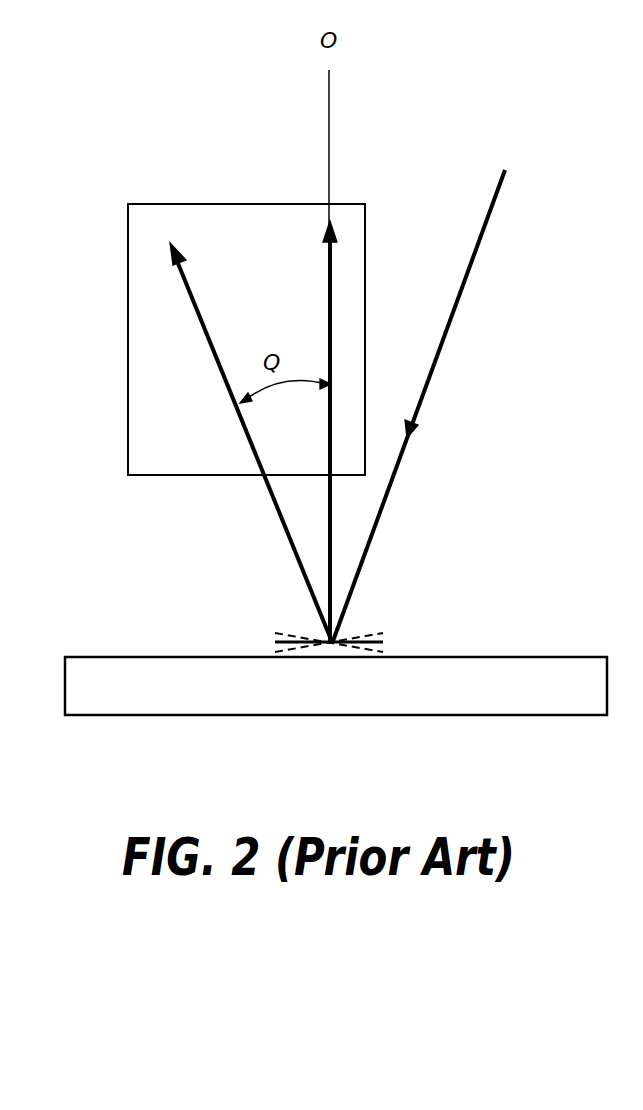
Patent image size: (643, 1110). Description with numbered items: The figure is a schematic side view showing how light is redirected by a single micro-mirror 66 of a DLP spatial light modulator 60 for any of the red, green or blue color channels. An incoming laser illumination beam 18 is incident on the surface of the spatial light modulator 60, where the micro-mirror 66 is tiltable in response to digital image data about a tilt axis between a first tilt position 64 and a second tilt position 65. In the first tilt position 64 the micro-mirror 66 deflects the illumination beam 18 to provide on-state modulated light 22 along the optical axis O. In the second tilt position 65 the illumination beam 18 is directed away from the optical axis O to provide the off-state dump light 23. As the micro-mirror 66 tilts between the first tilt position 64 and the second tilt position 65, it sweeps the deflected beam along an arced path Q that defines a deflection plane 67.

The laser illumination beam 18 is at (478, 242).
The on-state modulated light 22 is at (328, 292).
The off-state dump light 23 is at (206, 330).
The DLP spatial light modulator 60 is at (520, 657).
The first tilt position 64 is at (382, 651).
The second tilt position 65 is at (381, 633).
The micro-mirror 66 is at (276, 641).
The deflection plane 67 is at (128, 343).